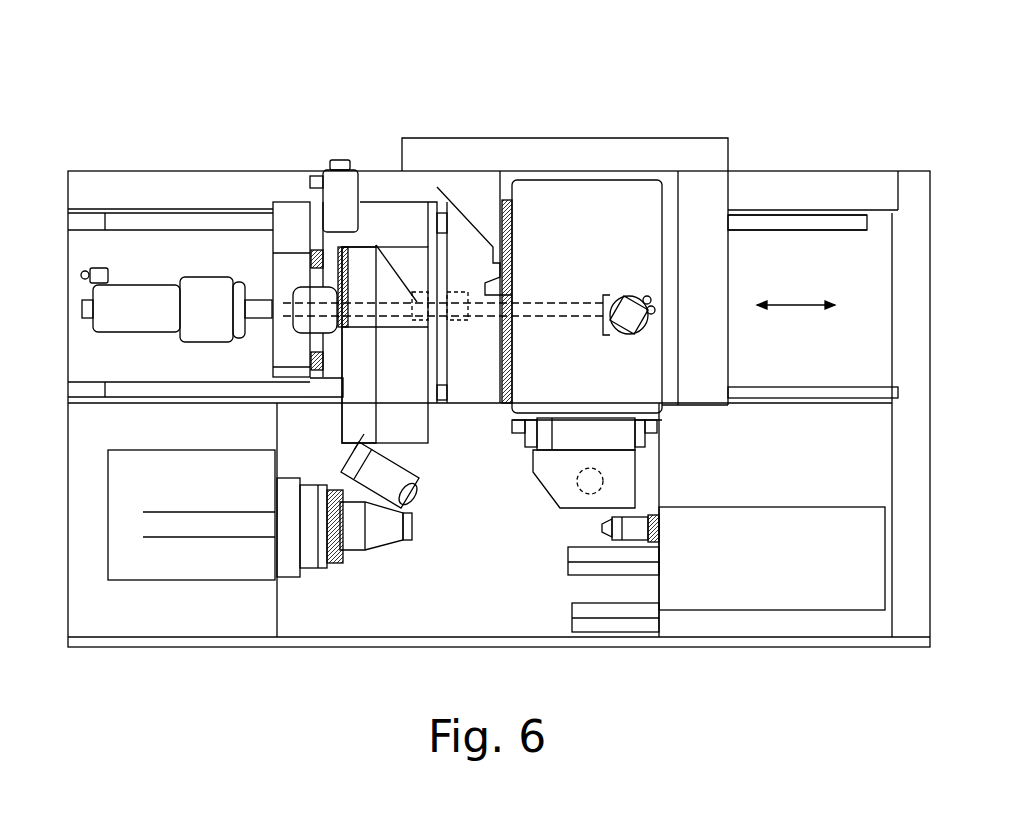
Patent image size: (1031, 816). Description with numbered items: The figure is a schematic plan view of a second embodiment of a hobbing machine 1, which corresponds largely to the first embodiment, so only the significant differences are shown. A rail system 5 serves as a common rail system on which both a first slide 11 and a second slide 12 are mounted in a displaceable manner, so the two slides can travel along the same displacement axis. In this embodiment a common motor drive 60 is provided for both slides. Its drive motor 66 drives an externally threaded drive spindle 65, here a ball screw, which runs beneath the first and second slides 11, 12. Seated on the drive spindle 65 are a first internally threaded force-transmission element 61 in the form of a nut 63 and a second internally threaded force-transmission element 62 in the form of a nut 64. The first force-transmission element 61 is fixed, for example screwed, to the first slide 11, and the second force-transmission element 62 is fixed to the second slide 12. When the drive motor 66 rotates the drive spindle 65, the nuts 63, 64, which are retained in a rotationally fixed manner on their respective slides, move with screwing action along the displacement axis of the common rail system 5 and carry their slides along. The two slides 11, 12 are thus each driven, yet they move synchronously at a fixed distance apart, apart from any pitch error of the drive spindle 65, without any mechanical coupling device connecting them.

The hobbing machine 1 is at (975, 266).
The rail system 5 is at (788, 220).
The first slide 11 is at (551, 214).
The second slide 12 is at (391, 213).
The common motor drive 60 is at (206, 296).
The first internally threaded force-transmission element 61 is at (474, 330).
The second internally threaded force-transmission element 62 is at (438, 203).
The nut 63 is at (455, 320).
The nut 64 is at (418, 303).
The drive spindle 65 is at (258, 307).
The drive motor 66 is at (140, 303).